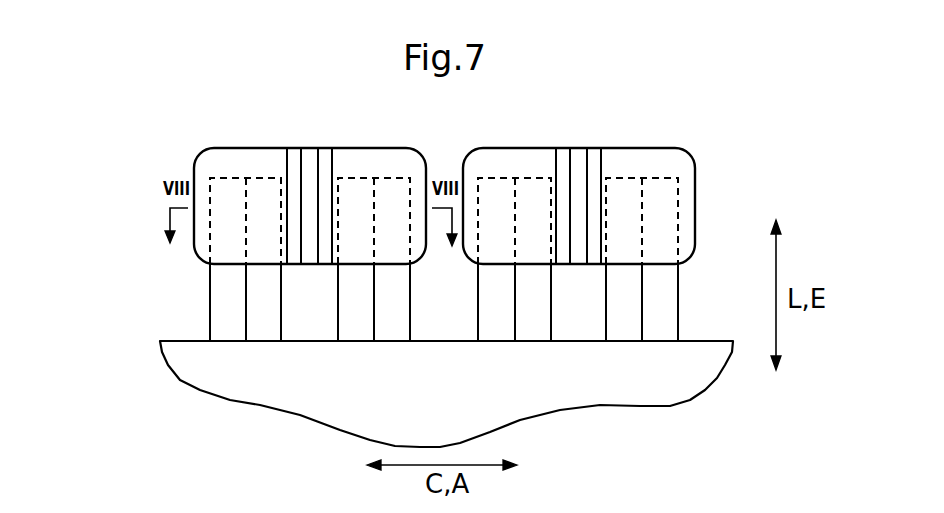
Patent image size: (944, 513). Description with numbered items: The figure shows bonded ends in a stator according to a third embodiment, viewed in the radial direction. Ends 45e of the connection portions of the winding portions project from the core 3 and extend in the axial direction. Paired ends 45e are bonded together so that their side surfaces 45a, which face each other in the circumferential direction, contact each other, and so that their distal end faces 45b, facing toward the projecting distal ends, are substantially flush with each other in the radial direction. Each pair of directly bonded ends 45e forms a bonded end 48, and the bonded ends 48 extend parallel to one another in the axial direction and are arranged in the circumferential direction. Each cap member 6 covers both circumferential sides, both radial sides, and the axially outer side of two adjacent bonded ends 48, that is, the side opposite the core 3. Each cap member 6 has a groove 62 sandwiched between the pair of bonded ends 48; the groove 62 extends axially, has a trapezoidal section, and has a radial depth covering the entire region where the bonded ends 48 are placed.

The core 3 is at (185, 350).
The cap member 6 is at (190, 160).
The groove 62 is at (310, 175).
The end of connection portion 45e is at (263, 187).
The distal end face 45b is at (388, 177).
The bonded end 48 is at (517, 170).
The side surface 45a is at (515, 228).